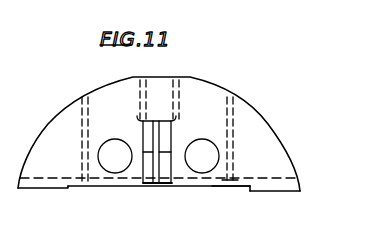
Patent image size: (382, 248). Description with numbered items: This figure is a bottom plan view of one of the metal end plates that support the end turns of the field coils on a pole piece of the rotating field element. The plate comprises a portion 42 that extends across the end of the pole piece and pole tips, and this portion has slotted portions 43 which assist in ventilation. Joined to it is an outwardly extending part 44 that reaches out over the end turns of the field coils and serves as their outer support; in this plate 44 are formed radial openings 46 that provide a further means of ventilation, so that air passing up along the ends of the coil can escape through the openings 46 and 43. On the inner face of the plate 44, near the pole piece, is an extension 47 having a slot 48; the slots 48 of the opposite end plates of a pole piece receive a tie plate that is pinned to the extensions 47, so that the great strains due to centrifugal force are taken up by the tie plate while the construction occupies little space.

The portion extending across the end of the pole piece 42 is at (281, 187).
The slotted portions 43 is at (93, 187).
The outwardly extending part 44 is at (208, 103).
The radial openings 46 is at (158, 156).
The extension 47 is at (148, 171).
The slot 48 is at (155, 170).